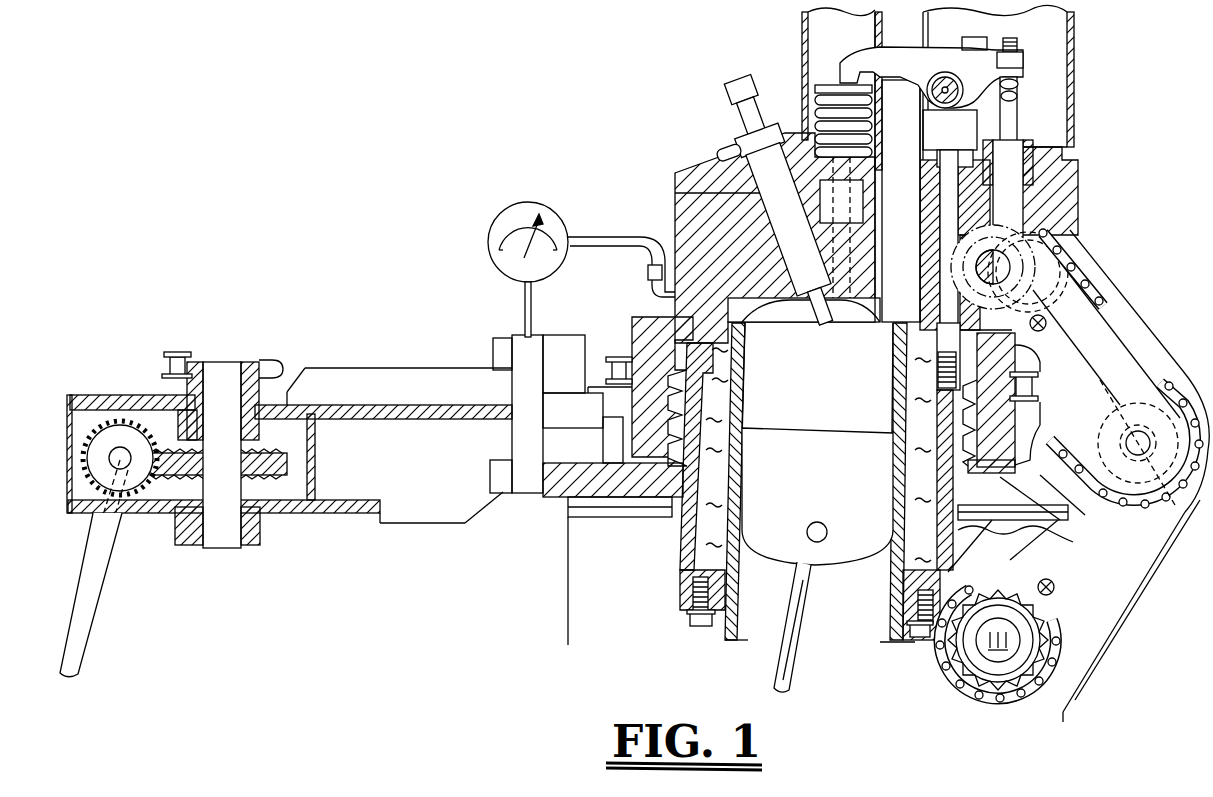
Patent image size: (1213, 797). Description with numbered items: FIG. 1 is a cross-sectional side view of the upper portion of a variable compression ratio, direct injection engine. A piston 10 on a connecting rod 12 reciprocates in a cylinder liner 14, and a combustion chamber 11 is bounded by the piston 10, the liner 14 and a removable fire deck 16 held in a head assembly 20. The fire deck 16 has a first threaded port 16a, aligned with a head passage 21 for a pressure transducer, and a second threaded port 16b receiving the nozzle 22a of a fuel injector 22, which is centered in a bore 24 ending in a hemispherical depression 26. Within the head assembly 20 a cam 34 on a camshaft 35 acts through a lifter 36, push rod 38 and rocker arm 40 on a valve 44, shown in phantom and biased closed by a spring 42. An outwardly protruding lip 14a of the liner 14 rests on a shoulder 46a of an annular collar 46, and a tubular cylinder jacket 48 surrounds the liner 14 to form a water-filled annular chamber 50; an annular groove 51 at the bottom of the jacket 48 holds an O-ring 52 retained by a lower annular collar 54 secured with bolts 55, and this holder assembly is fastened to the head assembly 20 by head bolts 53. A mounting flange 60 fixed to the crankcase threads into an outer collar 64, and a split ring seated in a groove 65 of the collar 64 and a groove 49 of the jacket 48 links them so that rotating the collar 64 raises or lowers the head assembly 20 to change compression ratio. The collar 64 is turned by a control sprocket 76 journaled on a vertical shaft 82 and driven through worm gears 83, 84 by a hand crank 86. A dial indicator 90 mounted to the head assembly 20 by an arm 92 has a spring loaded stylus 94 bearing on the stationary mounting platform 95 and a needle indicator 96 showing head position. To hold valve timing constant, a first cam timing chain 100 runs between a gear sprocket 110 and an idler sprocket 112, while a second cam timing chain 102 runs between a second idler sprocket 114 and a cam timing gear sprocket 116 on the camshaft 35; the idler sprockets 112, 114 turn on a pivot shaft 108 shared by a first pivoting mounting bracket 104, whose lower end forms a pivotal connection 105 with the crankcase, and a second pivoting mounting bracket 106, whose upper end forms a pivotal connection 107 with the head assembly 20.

The piston 10 is at (826, 503).
The combustion chamber 11 is at (826, 395).
The connecting rod 12 is at (800, 632).
The cylinder liner 14 is at (902, 407).
The outwardly protruding lip 14a is at (772, 324).
The fire deck 16 is at (876, 252).
The first threaded port 16a is at (888, 312).
The second threaded port 16b is at (806, 320).
The head assembly 20 is at (615, 180).
The head passage 21 is at (909, 247).
The fuel injector 22 is at (705, 120).
The nozzle 22a is at (830, 322).
The bore 24 is at (762, 248).
The hemispherical depression 26 is at (770, 268).
The cam 34 is at (996, 303).
The camshaft 35 is at (1000, 255).
The lifter 36 is at (1018, 193).
The push rod 38 is at (1014, 120).
The rocker arm 40 is at (920, 66).
The spring 42 is at (818, 90).
The valve 44 is at (863, 213).
The annular collar 46 is at (704, 456).
The shoulder 46a is at (900, 373).
The cylinder jacket 48 is at (682, 556).
The groove 49 is at (716, 447).
The annular chamber 50 is at (720, 497).
The annular groove 51 is at (900, 596).
The O-ring 52 is at (725, 588).
The head bolts 53 is at (952, 158).
The lower annular collar 54 is at (722, 622).
The bolts 55 is at (690, 624).
The mounting flange 60 is at (566, 492).
The outer collar 64 is at (645, 323).
The groove 65 is at (628, 360).
The control sprocket 76 is at (258, 362).
The vertical shaft 82 is at (220, 548).
The gear 83 is at (268, 474).
The gear 84 is at (145, 478).
The hand crank 86 is at (98, 600).
The dial indicator 90 is at (522, 206).
The arm 92 is at (590, 241).
The spring loaded stylus 94 is at (524, 297).
The mounting platform 95 is at (520, 343).
The needle indicator 96 is at (518, 243).
The first cam timing chain 100 is at (1062, 660).
The second cam timing chain 102 is at (1082, 280).
The first pivoting mounting bracket 104 is at (1104, 531).
The pivotal connection 105 is at (1054, 578).
The second pivoting mounting bracket 106 is at (1102, 381).
The pivotal connection 107 is at (1044, 322).
The pivot shaft 108 is at (1142, 440).
The gear sprocket 110 is at (1004, 690).
The idler sprocket 112 is at (1044, 620).
The second idler sprocket 114 is at (1164, 481).
The cam timing gear sprocket 116 is at (1078, 275).